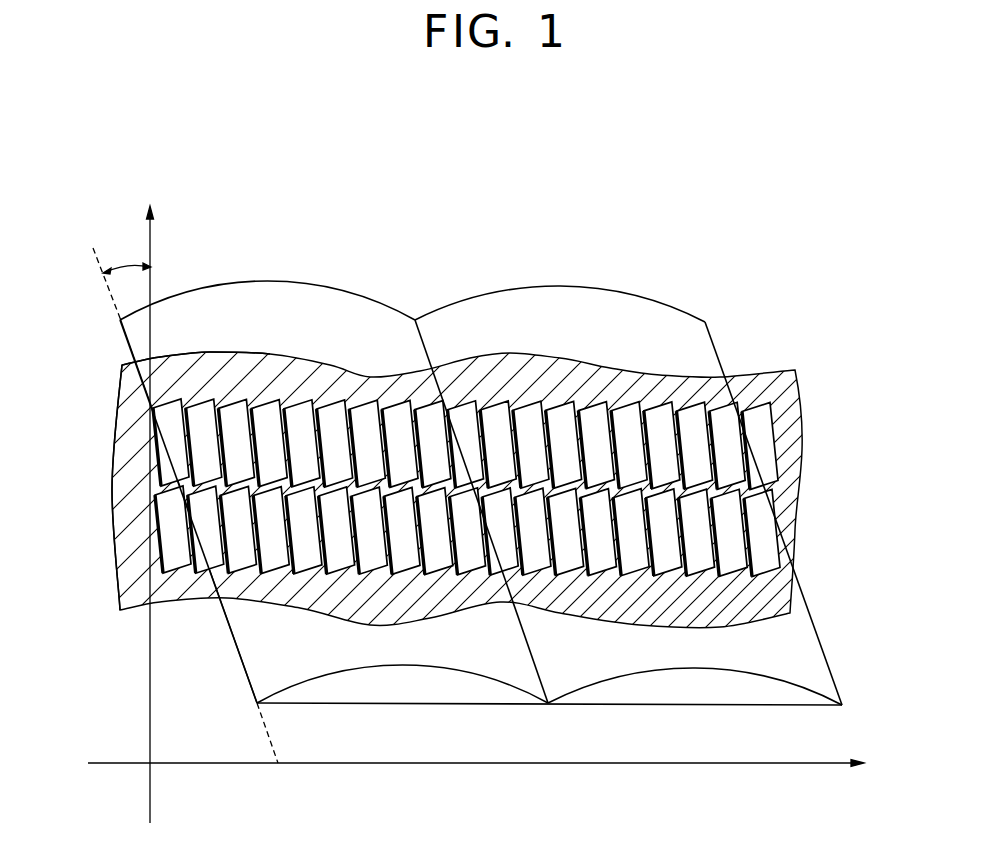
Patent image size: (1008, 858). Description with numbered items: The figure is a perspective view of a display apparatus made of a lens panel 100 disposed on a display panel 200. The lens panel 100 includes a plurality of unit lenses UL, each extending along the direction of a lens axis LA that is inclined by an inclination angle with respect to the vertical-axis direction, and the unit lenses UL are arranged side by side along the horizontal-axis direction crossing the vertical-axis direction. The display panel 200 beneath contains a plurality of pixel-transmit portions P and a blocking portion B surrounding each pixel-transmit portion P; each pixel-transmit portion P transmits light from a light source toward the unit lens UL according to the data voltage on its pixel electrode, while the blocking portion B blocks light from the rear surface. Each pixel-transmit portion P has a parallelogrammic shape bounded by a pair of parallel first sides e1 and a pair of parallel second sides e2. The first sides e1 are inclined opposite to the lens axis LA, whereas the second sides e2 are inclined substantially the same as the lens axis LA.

The lens panel 100 is at (481, 463).
The unit lens UL is at (557, 287).
The display panel 200 is at (504, 475).
The pixel-transmit portion P is at (765, 437).
The blocking portion B is at (785, 497).
The first side e1 is at (186, 352).
The second side e2 is at (155, 454).
The lens axis LA is at (178, 494).